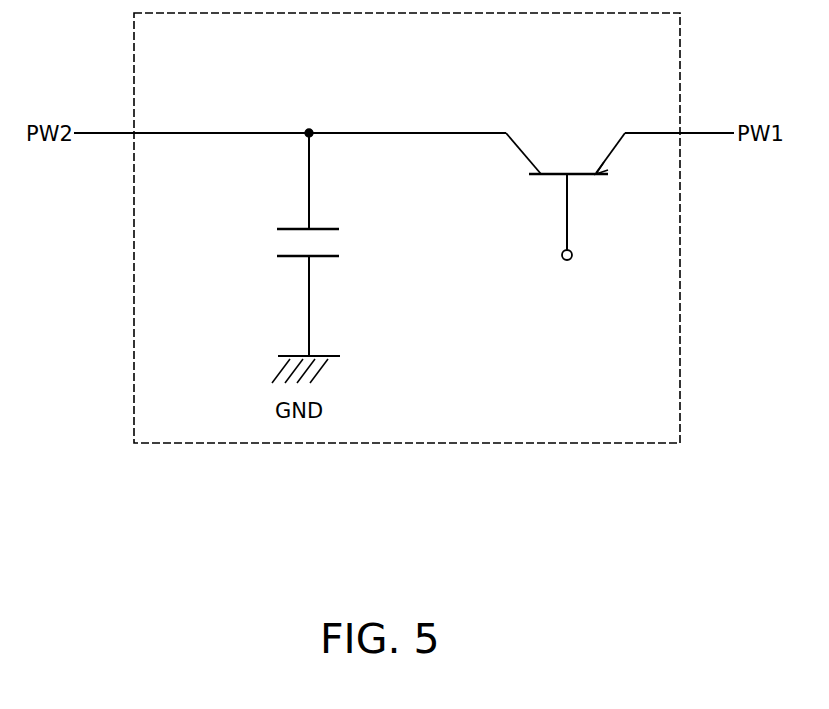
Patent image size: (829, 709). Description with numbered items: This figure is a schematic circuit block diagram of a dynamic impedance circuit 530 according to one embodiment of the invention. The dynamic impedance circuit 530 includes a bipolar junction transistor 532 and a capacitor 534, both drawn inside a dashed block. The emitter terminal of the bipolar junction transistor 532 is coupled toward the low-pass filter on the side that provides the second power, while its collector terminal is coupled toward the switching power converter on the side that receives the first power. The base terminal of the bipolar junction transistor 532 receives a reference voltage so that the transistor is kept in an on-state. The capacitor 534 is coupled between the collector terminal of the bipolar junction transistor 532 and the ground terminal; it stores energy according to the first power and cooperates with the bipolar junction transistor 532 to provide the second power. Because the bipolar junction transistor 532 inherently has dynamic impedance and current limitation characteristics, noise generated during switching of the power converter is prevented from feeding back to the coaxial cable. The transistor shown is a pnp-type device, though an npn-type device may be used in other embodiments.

The dynamic impedance circuit 530 is at (586, 493).
The bipolar junction transistor 532 is at (572, 128).
The capacitor 534 is at (345, 245).